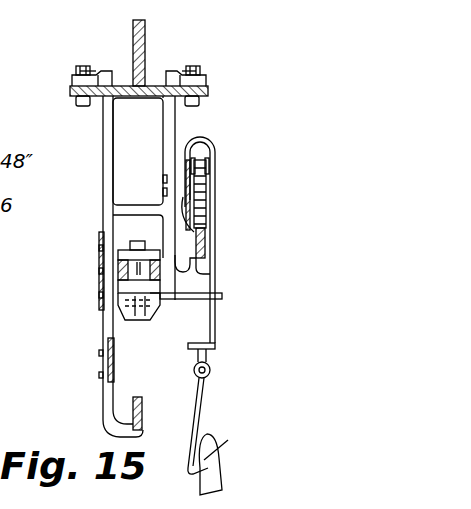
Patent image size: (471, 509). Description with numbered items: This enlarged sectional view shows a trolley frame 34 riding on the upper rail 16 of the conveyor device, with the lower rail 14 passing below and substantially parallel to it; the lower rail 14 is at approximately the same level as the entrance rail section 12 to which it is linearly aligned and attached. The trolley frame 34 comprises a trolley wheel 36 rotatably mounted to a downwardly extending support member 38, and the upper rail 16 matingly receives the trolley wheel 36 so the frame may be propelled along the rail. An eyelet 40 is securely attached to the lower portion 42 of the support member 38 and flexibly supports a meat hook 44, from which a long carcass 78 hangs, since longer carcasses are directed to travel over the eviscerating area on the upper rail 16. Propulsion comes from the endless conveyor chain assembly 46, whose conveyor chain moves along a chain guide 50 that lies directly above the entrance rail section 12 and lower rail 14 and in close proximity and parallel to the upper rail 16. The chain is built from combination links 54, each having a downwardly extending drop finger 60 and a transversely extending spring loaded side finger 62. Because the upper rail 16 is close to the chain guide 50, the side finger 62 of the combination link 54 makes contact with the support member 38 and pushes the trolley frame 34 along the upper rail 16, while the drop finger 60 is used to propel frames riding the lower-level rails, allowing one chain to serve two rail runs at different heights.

The entrance rail section 12 is at (139, 63).
The lower rail 14 is at (142, 432).
The upper rail 16 is at (210, 245).
The trolley frame 34 is at (232, 200).
The trolley wheel 36 is at (197, 217).
The support member 38 is at (215, 268).
The eyelet 40 is at (211, 371).
The lower portion 42 is at (214, 348).
The meat hook 44 is at (200, 405).
The endless conveyor chain assembly 46 is at (163, 322).
The chain guide 50 is at (110, 266).
The combination link 54 is at (148, 315).
The drop finger 60 is at (131, 323).
The side finger 62 is at (222, 296).
The long carcass 78 is at (218, 474).